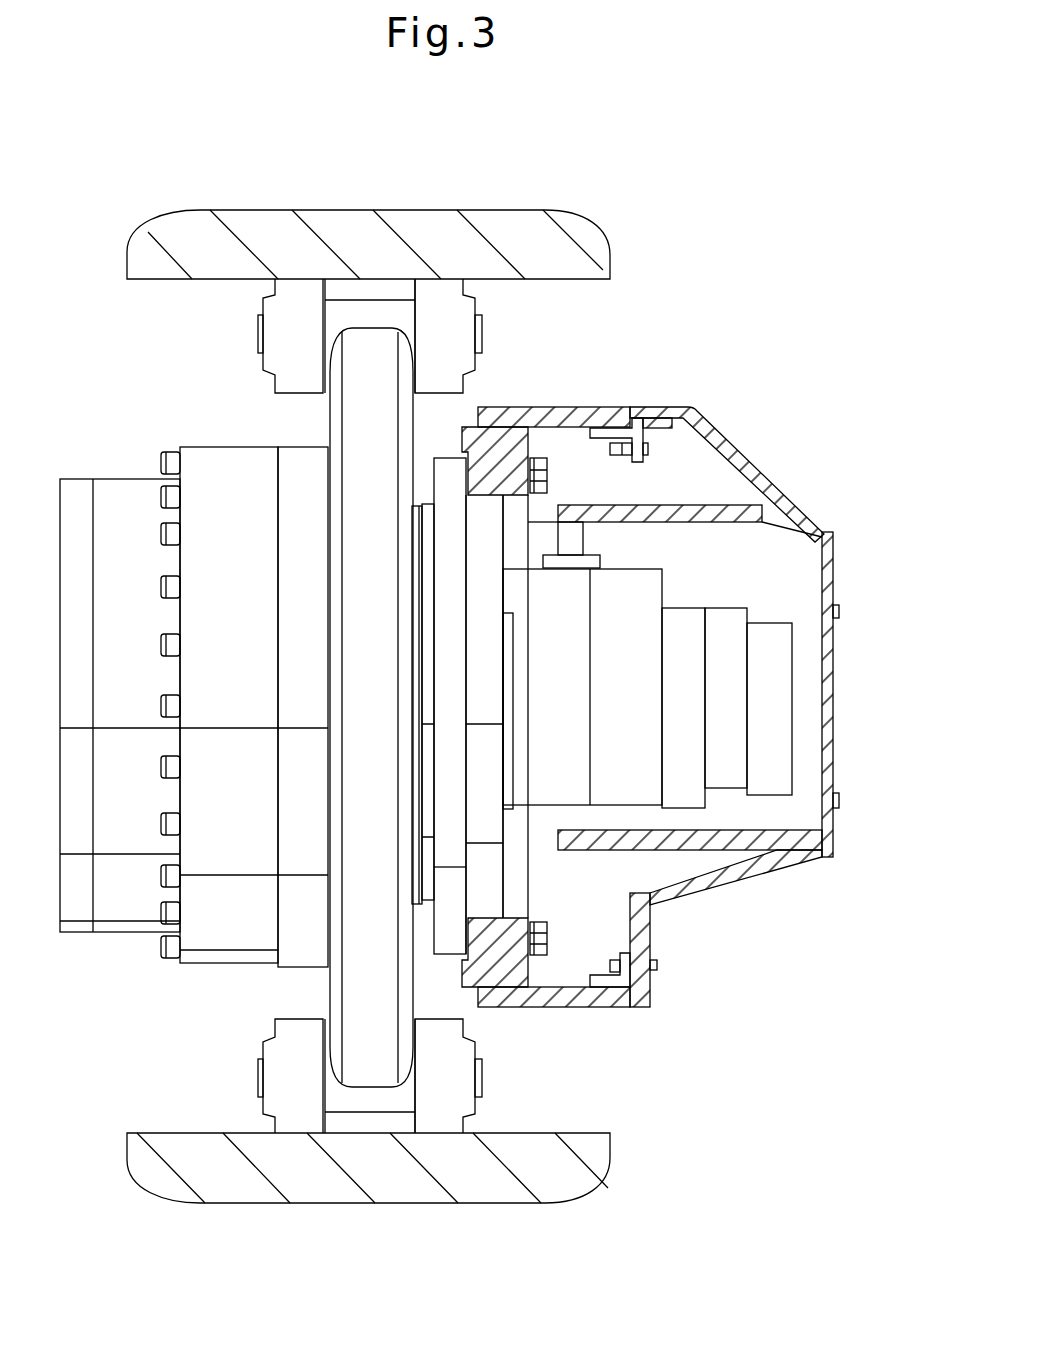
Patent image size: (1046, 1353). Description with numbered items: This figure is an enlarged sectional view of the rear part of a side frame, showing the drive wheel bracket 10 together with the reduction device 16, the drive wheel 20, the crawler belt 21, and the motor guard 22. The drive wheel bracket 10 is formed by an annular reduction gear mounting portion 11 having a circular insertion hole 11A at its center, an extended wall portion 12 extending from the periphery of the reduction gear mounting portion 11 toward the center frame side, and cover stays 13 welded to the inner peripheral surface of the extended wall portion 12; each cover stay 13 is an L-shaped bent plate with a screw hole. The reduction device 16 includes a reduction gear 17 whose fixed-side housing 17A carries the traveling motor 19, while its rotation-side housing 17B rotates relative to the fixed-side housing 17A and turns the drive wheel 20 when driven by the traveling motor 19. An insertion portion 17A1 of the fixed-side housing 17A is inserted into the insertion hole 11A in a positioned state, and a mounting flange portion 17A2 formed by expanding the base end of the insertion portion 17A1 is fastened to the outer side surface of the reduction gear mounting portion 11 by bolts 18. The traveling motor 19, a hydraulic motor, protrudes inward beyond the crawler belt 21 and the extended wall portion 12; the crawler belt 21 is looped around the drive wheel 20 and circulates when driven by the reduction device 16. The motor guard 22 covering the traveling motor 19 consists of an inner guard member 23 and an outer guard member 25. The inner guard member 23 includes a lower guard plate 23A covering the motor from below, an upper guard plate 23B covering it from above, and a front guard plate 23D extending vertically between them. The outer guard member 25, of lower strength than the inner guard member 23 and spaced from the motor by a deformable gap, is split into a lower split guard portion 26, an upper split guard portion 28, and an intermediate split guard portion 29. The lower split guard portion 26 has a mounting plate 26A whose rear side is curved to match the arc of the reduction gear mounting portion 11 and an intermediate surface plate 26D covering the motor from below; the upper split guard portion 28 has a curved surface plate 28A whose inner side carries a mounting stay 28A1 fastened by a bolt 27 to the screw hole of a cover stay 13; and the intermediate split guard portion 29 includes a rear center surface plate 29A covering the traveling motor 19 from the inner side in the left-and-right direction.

The drive wheel bracket 10 is at (546, 687).
The reduction gear mounting portion 11 is at (508, 440).
The insertion hole 11A is at (512, 917).
The extended wall portion 12 is at (548, 997).
The cover stay 13 is at (606, 428).
The reduction device 16 is at (194, 697).
The reduction gear 17 is at (204, 936).
The fixed-side housing 17A is at (452, 660).
The insertion portion 17A1 is at (485, 743).
The mounting flange portion 17A2 is at (452, 596).
The rotation-side housing 17B is at (239, 941).
The bolt 18 is at (540, 478).
The traveling motor 19 is at (735, 705).
The drive wheel 20 is at (370, 342).
The crawler belt 21 is at (380, 1178).
The motor guard 22 is at (742, 430).
The inner guard member 23 is at (734, 690).
The lower guard plate 23A is at (732, 840).
The upper guard plate 23B is at (760, 514).
The front guard plate 23D is at (767, 583).
The outer guard member 25 is at (842, 632).
The lower split guard portion 26 is at (734, 964).
The mounting plate 26A is at (643, 990).
The intermediate surface plate 26D is at (688, 885).
The bolt 27 is at (672, 412).
The upper split guard portion 28 is at (708, 694).
The curved surface plate 28A is at (718, 420).
The mounting stay 28A1 is at (648, 424).
The intermediate split guard portion 29 is at (828, 760).
The rear center surface plate 29A is at (828, 663).